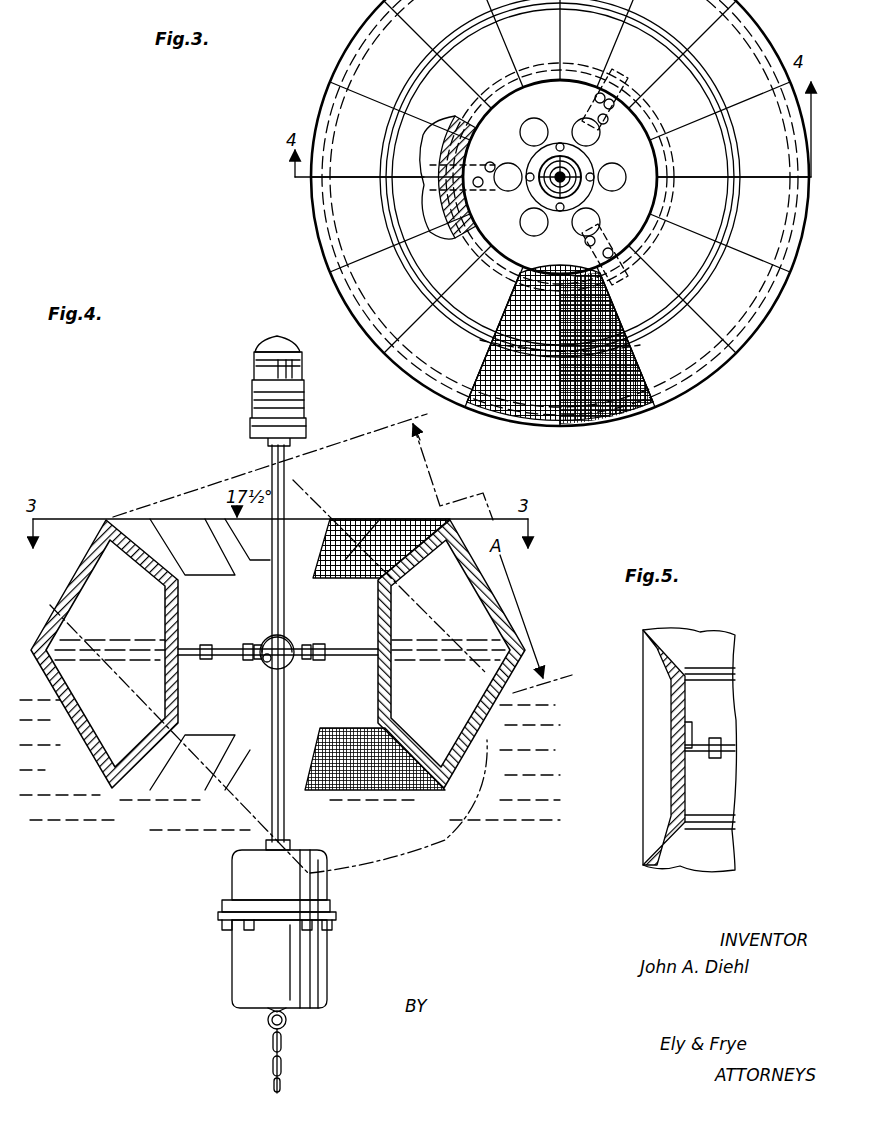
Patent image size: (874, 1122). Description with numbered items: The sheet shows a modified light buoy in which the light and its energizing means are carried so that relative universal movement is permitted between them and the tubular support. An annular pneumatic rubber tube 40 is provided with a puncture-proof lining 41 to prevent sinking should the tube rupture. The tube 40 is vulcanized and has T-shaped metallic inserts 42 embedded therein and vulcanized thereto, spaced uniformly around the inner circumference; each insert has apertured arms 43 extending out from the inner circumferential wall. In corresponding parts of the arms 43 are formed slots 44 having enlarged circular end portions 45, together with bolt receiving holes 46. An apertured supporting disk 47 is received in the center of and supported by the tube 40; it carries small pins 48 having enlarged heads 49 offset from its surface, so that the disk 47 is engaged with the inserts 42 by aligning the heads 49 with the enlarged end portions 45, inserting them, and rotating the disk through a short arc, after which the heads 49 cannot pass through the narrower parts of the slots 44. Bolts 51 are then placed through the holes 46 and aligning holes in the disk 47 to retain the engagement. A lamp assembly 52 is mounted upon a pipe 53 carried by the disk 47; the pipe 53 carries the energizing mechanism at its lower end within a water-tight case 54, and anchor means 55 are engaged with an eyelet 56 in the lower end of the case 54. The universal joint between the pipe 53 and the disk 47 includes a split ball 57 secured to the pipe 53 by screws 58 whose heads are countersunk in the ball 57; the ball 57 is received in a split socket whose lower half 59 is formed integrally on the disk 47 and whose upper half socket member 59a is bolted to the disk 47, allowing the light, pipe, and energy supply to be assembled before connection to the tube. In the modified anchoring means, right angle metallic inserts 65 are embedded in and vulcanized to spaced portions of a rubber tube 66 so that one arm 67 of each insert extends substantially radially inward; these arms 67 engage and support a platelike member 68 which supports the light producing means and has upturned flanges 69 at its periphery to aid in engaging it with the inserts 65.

In FIG. 3, the annular pneumatic rubber tube 40 is at (600, 426).
In FIG. 4, the annular pneumatic rubber tube 40 is at (290, 674).
In FIG. 3, the puncture-proof lining 41 is at (560, 177).
In FIG. 4, the puncture-proof lining 41 is at (110, 550).
In FIG. 3, the metallic inserts 42 is at (640, 95).
In FIG. 4, the metallic inserts 42 is at (175, 645).
In FIG. 3, the apertured arms 43 is at (522, 232).
In FIG. 4, the apertured arms 43 is at (205, 662).
In FIG. 3, the slots 44 is at (603, 255).
In FIG. 3, the enlarged circular end portions 45 is at (500, 148).
In FIG. 3, the bolt receiving holes 46 is at (530, 150).
In FIG. 4, the apertured supporting disk 47 is at (330, 652).
In FIG. 3, the pins 48 is at (480, 188).
In FIG. 3, the enlarged heads 49 is at (596, 99).
In FIG. 3, the bolts 51 is at (608, 124).
In FIG. 4, the bolts 51 is at (240, 634).
In FIG. 4, the lamp assembly 52 is at (330, 380).
In FIG. 4, the pipe 53 is at (285, 470).
In FIG. 4, the water-tight case 54 is at (332, 968).
In FIG. 4, the anchor means 55 is at (283, 1052).
In FIG. 4, the eyelet 56 is at (288, 1022).
In FIG. 4, the split ball 57 is at (290, 640).
In FIG. 4, the screws 58 is at (265, 668).
In FIG. 4, the lower half socket 59 is at (300, 660).
In FIG. 4, the half socket member 59a is at (258, 640).
In FIG. 5, the right angle metallic inserts 65 is at (670, 748).
In FIG. 5, the rubber tube 66 is at (670, 640).
In FIG. 5, the arm 67 is at (740, 752).
In FIG. 5, the platelike member 68 is at (722, 738).
In FIG. 5, the upturned flanges 69 is at (700, 728).